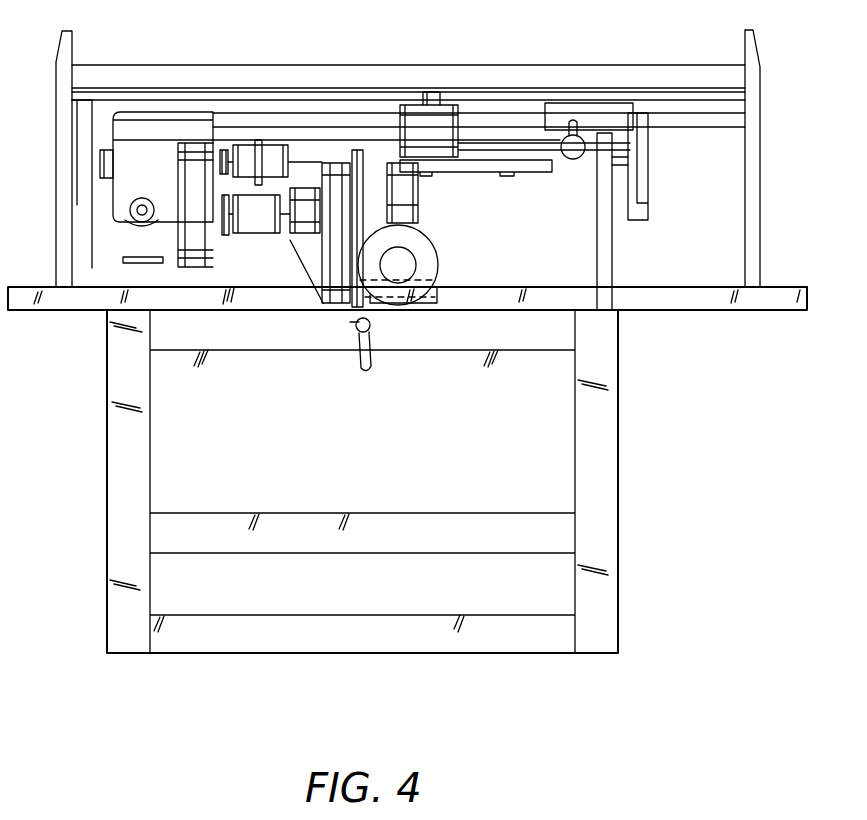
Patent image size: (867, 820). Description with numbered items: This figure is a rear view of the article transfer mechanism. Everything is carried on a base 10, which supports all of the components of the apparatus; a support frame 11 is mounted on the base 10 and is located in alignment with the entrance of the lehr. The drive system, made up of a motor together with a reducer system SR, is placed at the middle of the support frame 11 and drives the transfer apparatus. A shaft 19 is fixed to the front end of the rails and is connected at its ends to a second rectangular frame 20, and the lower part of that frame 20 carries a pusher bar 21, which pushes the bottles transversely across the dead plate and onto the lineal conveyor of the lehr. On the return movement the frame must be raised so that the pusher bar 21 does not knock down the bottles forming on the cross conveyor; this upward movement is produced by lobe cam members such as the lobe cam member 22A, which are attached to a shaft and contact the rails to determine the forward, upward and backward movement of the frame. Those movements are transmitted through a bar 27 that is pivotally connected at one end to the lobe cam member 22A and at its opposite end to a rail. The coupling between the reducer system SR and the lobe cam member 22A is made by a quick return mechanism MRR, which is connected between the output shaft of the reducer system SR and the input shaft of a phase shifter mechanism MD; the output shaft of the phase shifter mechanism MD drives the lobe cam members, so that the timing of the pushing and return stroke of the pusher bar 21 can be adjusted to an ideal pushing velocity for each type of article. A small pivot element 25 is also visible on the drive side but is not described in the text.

The base 10 is at (122, 425).
The support frame 11 is at (82, 247).
The shaft 19 is at (598, 77).
The second rectangular frame 20 is at (752, 160).
The pusher bar 21 is at (809, 287).
The lobe cam member 22A is at (646, 222).
The pivot pin 25 is at (140, 221).
The bar 27 is at (70, 184).
The phase shifter mechanism MD is at (150, 150).
The reducer system SR is at (414, 197).
The quick return mechanism MRR is at (338, 272).